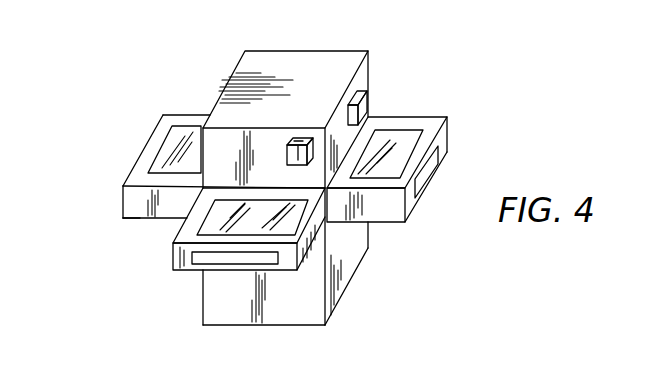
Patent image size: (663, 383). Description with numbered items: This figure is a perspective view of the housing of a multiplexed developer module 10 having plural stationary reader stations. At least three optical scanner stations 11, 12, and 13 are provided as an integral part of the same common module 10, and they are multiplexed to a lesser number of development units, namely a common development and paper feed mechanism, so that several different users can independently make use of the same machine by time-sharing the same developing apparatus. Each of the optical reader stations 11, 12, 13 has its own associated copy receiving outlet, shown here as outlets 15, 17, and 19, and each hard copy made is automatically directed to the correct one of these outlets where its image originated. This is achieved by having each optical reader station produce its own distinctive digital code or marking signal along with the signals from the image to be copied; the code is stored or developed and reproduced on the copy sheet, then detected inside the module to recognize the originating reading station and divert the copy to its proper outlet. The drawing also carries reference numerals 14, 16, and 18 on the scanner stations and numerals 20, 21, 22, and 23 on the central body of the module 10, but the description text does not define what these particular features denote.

The common module 10 is at (337, 74).
The optical scanner station 11 is at (152, 235).
The optical scanner station 12 is at (413, 112).
The optical scanner station 13 is at (118, 155).
The recessed window of front module 14 is at (217, 218).
The copy receiving outlet 15 is at (203, 264).
The recessed window of right module 16 is at (446, 120).
The copy receiving outlet 17 is at (440, 165).
The recessed window of left module 18 is at (172, 145).
The copy receiving outlet 19 is at (123, 206).
The control knob 20 is at (291, 165).
The slot in control knob 21 is at (303, 140).
The projection on housing 22 is at (366, 108).
The top of projection 23 is at (368, 100).